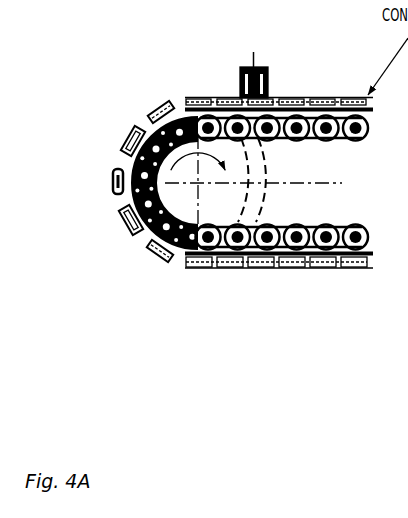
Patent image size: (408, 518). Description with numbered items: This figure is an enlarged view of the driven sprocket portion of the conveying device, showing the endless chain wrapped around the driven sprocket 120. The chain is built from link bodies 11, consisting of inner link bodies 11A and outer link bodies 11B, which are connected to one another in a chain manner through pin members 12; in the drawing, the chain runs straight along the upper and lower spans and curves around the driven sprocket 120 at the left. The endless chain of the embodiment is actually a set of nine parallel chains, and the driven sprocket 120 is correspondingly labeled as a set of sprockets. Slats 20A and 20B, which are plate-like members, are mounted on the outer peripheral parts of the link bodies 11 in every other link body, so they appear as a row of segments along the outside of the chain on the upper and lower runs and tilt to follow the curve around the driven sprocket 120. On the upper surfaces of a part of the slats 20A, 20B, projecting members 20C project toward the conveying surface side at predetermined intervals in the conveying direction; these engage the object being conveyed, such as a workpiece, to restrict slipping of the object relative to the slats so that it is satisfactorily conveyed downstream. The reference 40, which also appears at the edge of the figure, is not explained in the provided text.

The link body 11 is at (349, 161).
The inner link body 11A is at (356, 146).
The outer link body 11B is at (313, 143).
The pin member 12 is at (333, 226).
The slat 20A is at (153, 100).
The slat 20B is at (183, 96).
The projecting member 20C is at (268, 65).
The driven sprocket 120 is at (188, 197).
The conveyor unit 40 is at (401, 335).